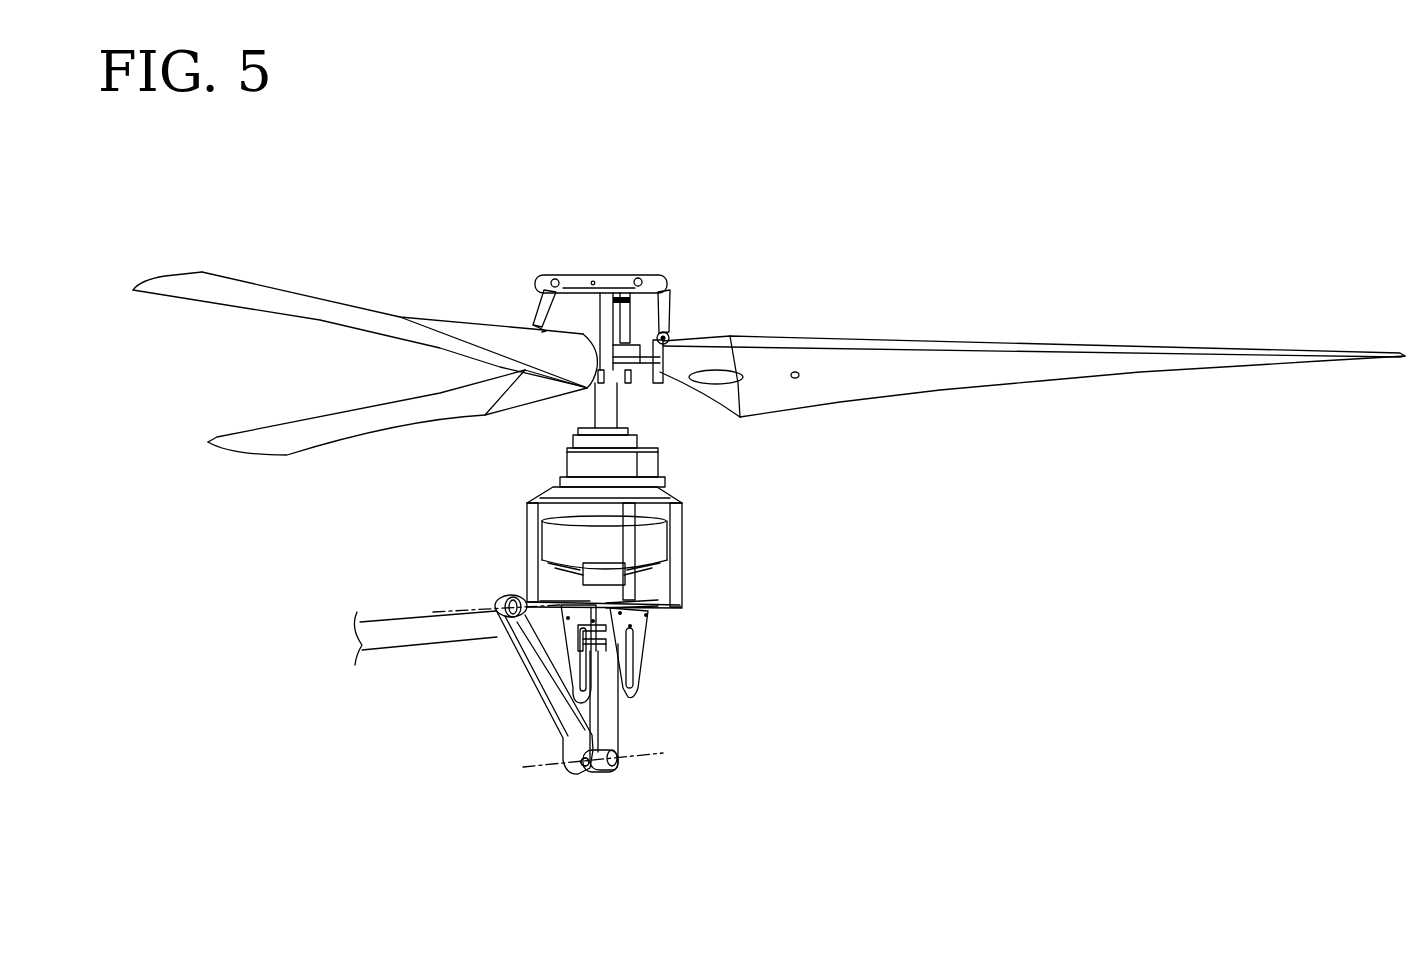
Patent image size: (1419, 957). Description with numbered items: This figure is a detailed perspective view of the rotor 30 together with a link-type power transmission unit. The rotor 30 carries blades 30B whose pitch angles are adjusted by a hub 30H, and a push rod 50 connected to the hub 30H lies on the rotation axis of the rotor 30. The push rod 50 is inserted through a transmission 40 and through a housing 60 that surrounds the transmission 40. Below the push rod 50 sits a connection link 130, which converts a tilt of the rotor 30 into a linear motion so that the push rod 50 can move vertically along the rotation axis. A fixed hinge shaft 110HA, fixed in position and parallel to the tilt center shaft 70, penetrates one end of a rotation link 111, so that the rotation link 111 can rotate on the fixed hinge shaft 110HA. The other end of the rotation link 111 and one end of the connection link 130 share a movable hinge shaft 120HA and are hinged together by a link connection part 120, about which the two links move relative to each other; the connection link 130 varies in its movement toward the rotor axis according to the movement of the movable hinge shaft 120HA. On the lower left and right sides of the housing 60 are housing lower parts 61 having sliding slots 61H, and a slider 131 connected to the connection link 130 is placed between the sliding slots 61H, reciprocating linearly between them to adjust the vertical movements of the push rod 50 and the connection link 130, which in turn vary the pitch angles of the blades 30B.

The rotor 30 is at (849, 222).
The hub 30H is at (665, 288).
The blades 30B is at (845, 360).
The push rod 50 is at (603, 313).
The housing 60 is at (572, 463).
The transmission 40 is at (662, 545).
The housing lower parts 61 is at (615, 609).
The sliding slots 61H is at (632, 667).
The slider 131 is at (630, 636).
The connection link 130 is at (613, 727).
The link connection part 120 is at (597, 767).
The movable hinge shaft 120HA is at (533, 766).
The fixed hinge shaft 110HA is at (449, 608).
The tilt center shaft 70 is at (413, 640).
The rotation link 111 is at (550, 710).